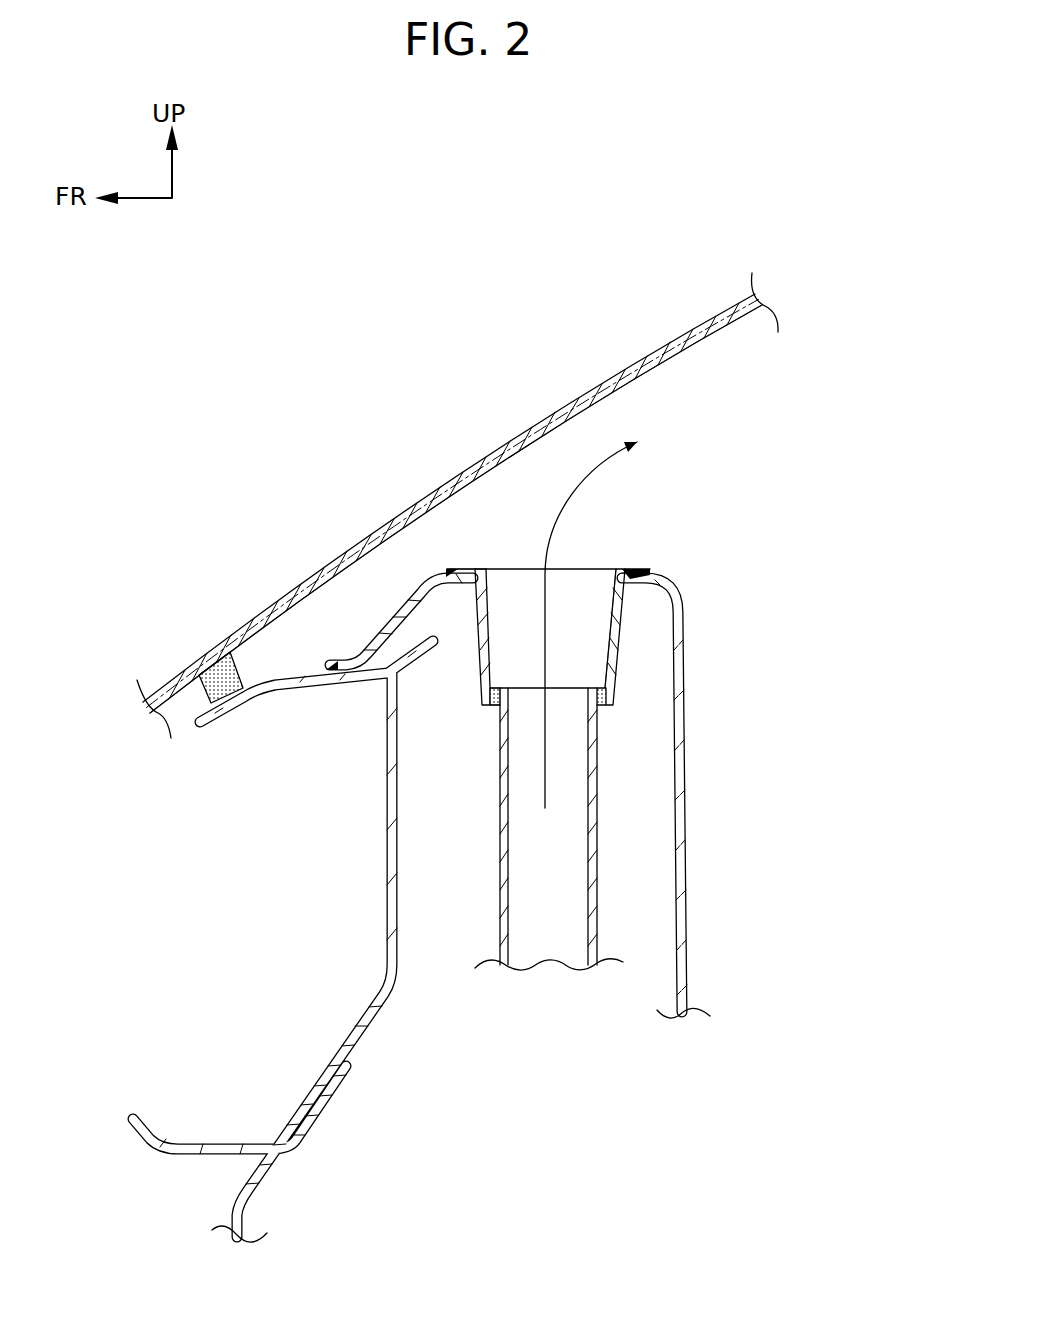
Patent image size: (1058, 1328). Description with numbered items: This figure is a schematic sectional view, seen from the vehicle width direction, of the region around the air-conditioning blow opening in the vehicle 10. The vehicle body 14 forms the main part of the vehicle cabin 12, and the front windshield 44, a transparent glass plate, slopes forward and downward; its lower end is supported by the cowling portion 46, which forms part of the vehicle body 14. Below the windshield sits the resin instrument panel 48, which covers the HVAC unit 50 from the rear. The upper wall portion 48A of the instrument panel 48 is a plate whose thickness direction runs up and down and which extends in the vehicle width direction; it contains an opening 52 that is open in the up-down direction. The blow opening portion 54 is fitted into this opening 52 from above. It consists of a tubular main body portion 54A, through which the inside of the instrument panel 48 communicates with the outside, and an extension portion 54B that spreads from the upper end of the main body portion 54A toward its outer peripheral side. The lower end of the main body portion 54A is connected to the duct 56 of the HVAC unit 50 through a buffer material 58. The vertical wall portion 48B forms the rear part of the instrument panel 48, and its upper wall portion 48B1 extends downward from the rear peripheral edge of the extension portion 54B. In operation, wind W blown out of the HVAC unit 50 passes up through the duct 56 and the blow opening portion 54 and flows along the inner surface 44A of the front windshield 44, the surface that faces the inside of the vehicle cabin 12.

The vehicle 10 is at (579, 243).
The vehicle cabin 12 is at (802, 490).
The vehicle body 14 is at (319, 941).
The front windshield 44 is at (689, 323).
The inner surface 44A is at (665, 361).
The cowling portion 46 is at (358, 1032).
The instrument panel 48 is at (699, 810).
The upper wall portion 48A is at (652, 572).
The vertical wall portion 48B is at (783, 812).
The upper wall portion 48B1 is at (687, 875).
The HVAC unit 50 is at (615, 890).
The opening 52 is at (493, 588).
The blow opening portion 54 is at (635, 560).
The main body portion 54A is at (615, 640).
The extension portion 54B is at (455, 568).
The duct 56 is at (598, 898).
The buffer material 58 is at (496, 704).
The wind W is at (568, 492).